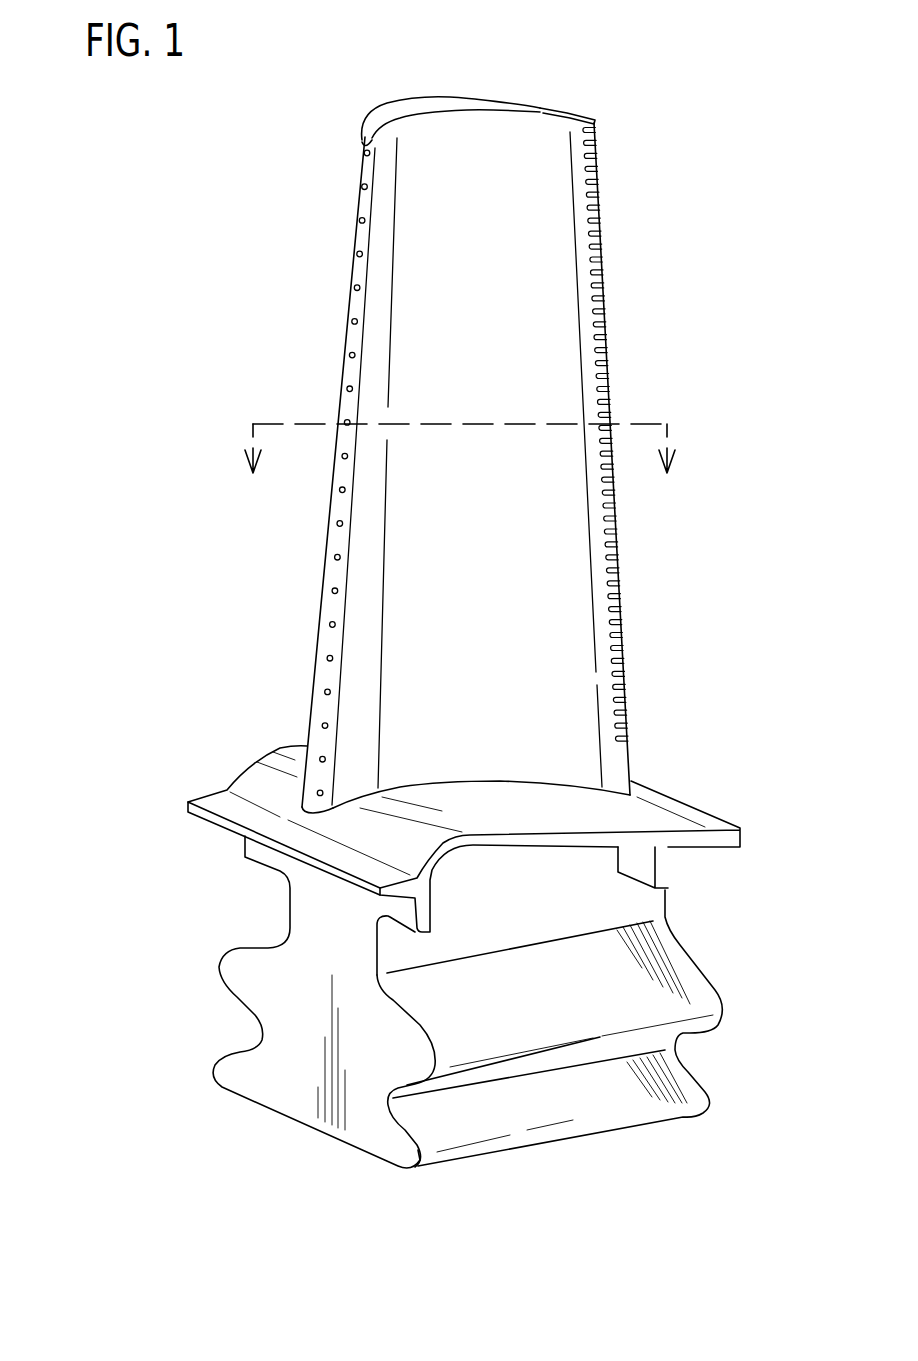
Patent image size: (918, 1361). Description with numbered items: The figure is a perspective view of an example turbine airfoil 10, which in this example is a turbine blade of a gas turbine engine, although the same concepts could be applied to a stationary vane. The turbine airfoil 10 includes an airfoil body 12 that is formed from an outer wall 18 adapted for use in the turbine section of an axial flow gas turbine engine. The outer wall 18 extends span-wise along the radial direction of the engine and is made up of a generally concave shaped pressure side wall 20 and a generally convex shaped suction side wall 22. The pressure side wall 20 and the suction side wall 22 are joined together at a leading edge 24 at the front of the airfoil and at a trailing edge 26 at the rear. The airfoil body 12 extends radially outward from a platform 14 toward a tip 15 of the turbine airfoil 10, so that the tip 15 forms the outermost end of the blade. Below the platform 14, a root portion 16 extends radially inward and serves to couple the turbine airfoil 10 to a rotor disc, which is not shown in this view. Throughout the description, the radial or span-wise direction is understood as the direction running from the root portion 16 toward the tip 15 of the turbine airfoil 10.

The turbine airfoil 10 is at (190, 1117).
The airfoil body 12 is at (330, 138).
The platform 14 is at (693, 807).
The tip 15 is at (541, 108).
The root portion 16 is at (697, 960).
The outer wall 18 is at (421, 551).
The pressure side wall 20 is at (492, 325).
The suction side wall 22 is at (425, 248).
The leading edge 24 is at (340, 371).
The trailing edge 26 is at (601, 208).